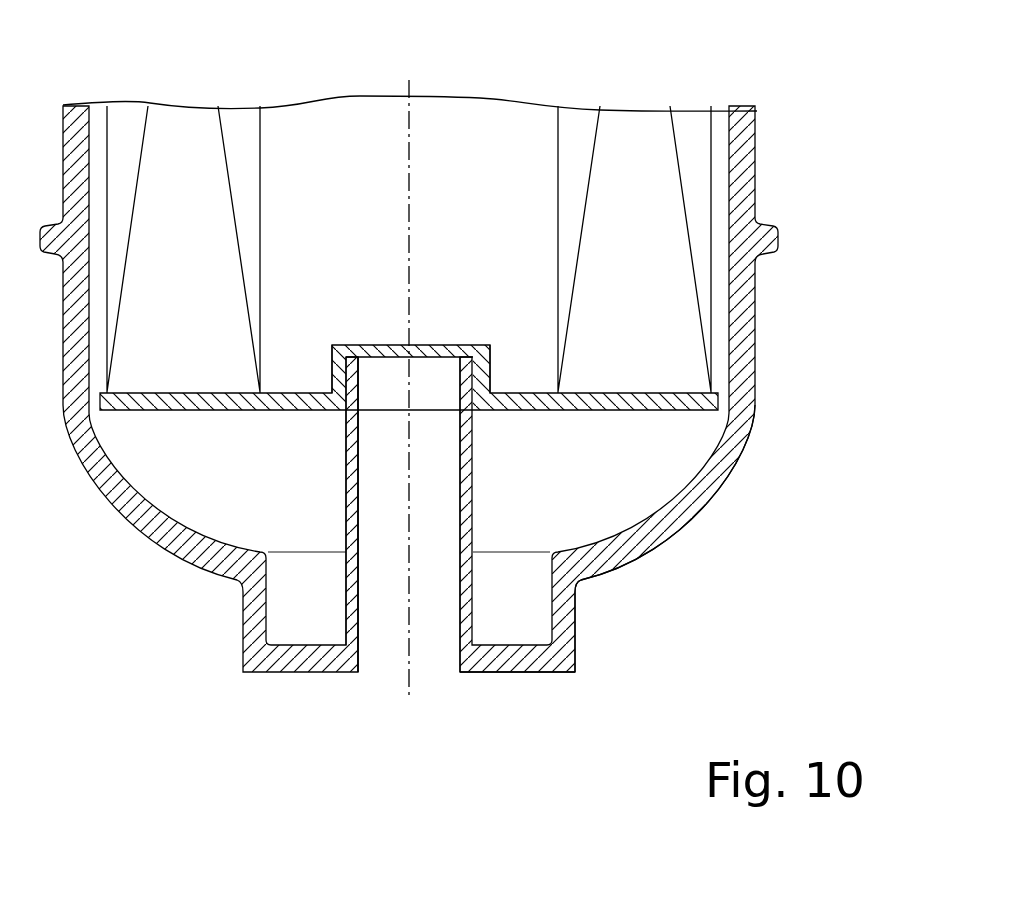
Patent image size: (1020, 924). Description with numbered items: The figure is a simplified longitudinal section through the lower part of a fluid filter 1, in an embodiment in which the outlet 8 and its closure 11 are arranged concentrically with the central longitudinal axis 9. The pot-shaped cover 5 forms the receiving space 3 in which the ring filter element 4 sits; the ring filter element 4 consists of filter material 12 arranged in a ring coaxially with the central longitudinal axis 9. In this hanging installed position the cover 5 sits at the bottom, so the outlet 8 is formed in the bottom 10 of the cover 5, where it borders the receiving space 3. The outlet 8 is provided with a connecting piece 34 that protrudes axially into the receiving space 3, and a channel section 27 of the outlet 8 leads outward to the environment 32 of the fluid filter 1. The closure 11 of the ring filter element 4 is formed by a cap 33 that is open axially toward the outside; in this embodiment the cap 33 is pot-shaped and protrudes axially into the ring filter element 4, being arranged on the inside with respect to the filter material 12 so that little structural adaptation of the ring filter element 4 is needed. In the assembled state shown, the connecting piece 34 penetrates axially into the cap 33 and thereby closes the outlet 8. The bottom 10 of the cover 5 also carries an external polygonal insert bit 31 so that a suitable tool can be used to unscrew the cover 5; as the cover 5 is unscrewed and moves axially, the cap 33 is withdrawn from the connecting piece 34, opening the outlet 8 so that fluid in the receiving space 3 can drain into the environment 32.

The fluid filter 1 is at (830, 142).
The receiving space 3 is at (242, 471).
The ring filter element 4 is at (641, 127).
The cover 5 is at (777, 338).
The outlet 8 is at (436, 650).
The central longitudinal axis 9 is at (410, 240).
The bottom 10 is at (622, 543).
The closure 11 is at (512, 361).
The filter material 12 is at (188, 125).
The channel section 27 is at (372, 636).
The polygonal insert bit 31 is at (574, 632).
The environment 32 is at (542, 745).
The cap 33 is at (383, 345).
The connecting piece 34 is at (357, 427).